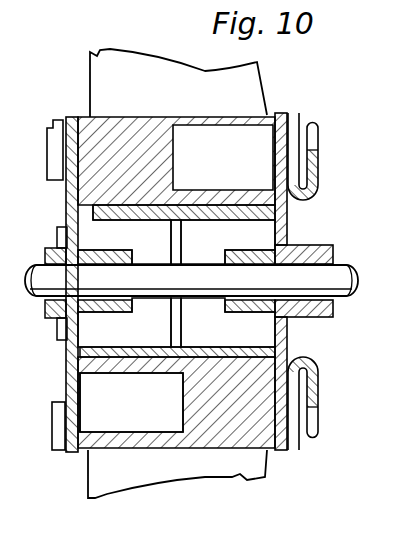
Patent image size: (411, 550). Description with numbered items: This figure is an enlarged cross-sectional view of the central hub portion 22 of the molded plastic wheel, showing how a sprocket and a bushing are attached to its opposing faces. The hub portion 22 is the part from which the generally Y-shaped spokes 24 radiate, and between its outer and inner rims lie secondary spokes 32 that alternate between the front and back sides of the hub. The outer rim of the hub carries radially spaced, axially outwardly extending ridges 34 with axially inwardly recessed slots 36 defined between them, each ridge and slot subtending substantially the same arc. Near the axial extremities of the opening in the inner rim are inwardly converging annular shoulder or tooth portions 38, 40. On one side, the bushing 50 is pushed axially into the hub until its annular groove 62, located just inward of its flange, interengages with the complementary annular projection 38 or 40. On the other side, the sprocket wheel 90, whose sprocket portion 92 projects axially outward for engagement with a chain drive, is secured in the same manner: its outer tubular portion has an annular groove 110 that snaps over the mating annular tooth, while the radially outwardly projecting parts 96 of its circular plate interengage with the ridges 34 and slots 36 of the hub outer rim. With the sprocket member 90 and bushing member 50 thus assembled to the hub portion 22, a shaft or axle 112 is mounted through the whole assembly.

The central hub portion 22 is at (235, 452).
The spokes 24 is at (110, 70).
The secondary spokes 32 is at (178, 157).
The ridges 34 is at (48, 150).
The slots 36 is at (64, 190).
The annular shoulder portion 38 is at (262, 206).
The annular shoulder portion 40 is at (96, 210).
The bushing 50 is at (60, 216).
The annular groove 62 is at (114, 362).
The sprocket wheel 90 is at (302, 217).
The sprocket portion 92 is at (320, 417).
The radially outwardly projecting parts 96 is at (288, 115).
The annular groove 110 is at (248, 366).
The shaft 112 is at (338, 275).